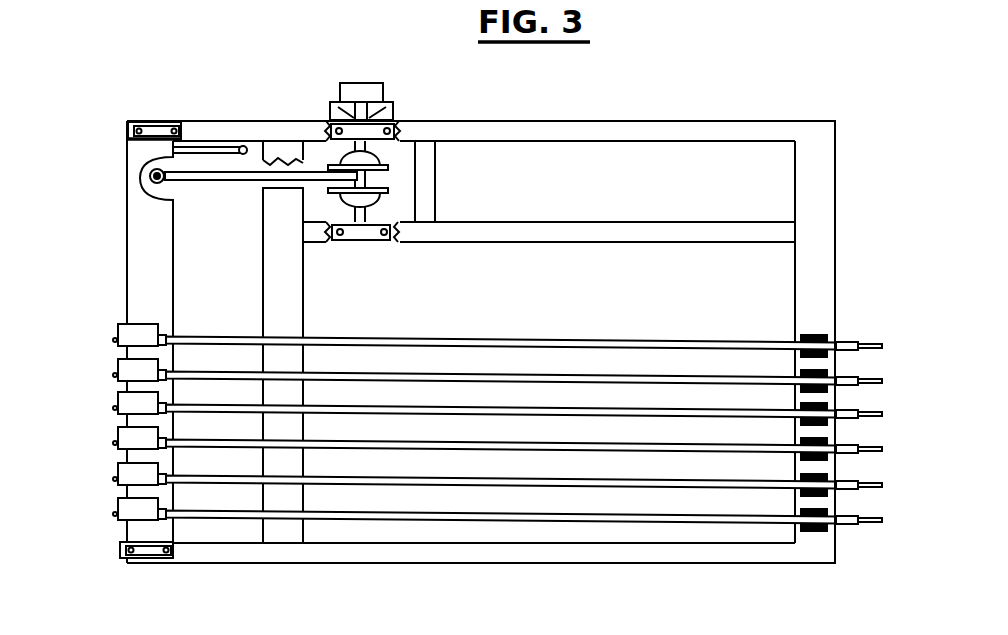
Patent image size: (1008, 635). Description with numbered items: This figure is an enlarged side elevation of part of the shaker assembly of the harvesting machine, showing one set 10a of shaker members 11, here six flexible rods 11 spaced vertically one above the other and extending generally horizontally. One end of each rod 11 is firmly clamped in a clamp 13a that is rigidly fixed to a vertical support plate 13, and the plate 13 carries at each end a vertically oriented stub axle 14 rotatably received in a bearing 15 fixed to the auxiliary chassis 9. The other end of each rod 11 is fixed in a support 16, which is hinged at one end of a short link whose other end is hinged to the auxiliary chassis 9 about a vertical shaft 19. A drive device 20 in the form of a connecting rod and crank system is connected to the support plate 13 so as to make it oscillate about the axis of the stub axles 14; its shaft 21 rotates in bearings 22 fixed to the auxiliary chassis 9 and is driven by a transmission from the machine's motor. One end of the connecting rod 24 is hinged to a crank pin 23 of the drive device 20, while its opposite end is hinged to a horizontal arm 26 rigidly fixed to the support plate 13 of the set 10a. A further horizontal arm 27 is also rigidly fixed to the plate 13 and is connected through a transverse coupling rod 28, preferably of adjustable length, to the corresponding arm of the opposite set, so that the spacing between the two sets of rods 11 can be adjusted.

The auxiliary chassis 9 is at (622, 124).
The set of shaker members 10a is at (496, 431).
The shaker member 11 is at (480, 408).
The vertical support plate 13 is at (157, 285).
The clamp 13a is at (133, 405).
The stub axle 14 is at (151, 557).
The bearing 15 is at (144, 558).
The support 16 is at (856, 381).
The vertical shaft 19 is at (812, 337).
The drive device 20 is at (404, 176).
The shaft 21 is at (388, 106).
The bearing 22 is at (331, 125).
The crank pin 23 is at (368, 177).
The connecting rod 24 is at (246, 182).
The horizontal arm 26 is at (150, 173).
The horizontal arm 27 is at (221, 147).
The coupling rod 28 is at (240, 155).